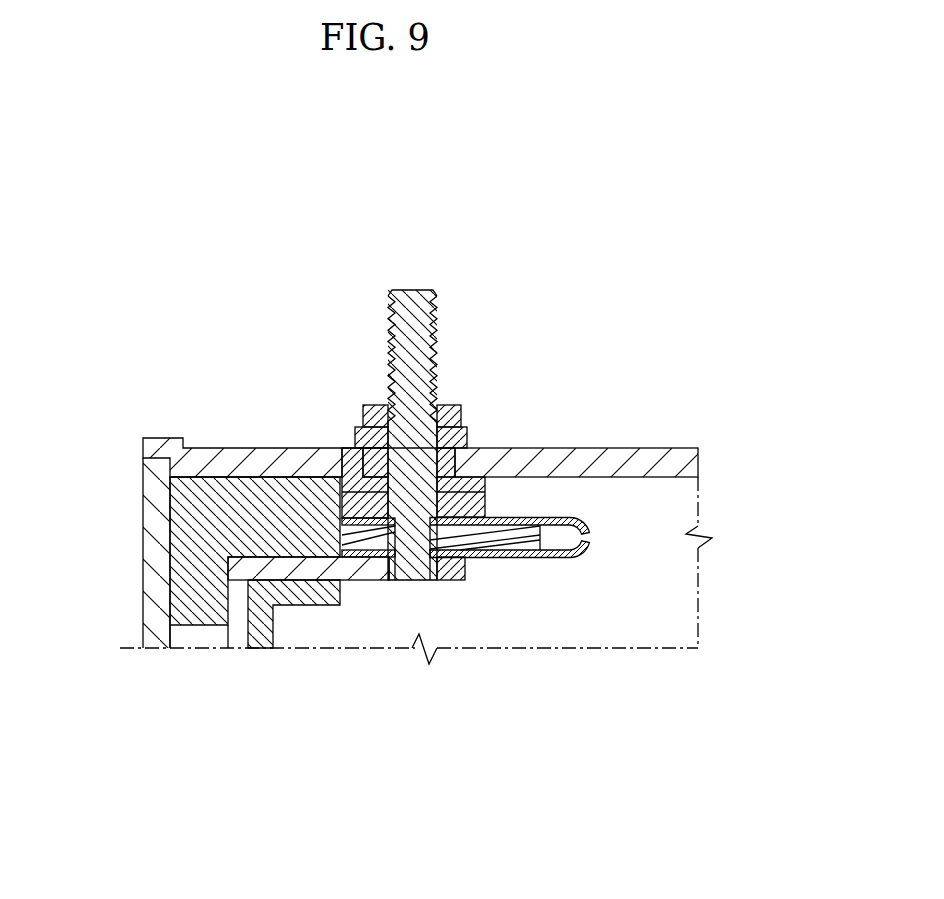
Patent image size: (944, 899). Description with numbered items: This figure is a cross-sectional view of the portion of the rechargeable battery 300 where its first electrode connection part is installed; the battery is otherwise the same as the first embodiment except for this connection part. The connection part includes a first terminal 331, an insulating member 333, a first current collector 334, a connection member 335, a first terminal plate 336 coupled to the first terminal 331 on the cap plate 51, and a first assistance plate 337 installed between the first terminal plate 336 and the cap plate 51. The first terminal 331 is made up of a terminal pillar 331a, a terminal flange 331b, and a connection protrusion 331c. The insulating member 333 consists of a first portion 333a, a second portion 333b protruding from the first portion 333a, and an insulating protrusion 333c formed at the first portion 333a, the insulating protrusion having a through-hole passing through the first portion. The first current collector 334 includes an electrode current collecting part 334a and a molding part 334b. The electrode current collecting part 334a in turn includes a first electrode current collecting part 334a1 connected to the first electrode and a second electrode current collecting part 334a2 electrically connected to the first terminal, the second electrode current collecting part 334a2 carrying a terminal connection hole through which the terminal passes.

The rechargeable battery 300 is at (245, 210).
The cap plate 51 is at (627, 450).
The first terminal 331 is at (622, 240).
The terminal pillar 331a is at (438, 330).
The terminal flange 331b is at (470, 507).
The connection protrusion 331c is at (535, 514).
The insulating member 333 is at (345, 478).
The first portion 333a is at (375, 582).
The second portion 333b is at (522, 537).
The insulating protrusion 333c is at (470, 574).
The first current collector 334 is at (115, 383).
The electrode current collecting part 334a is at (342, 732).
The first electrode current collecting part 334a1 is at (238, 603).
The second electrode current collecting part 334a2 is at (363, 572).
The molding part 334b is at (197, 512).
The connection member 335 is at (645, 555).
The first terminal plate 336 is at (368, 405).
The first assistance plate 337 is at (363, 437).